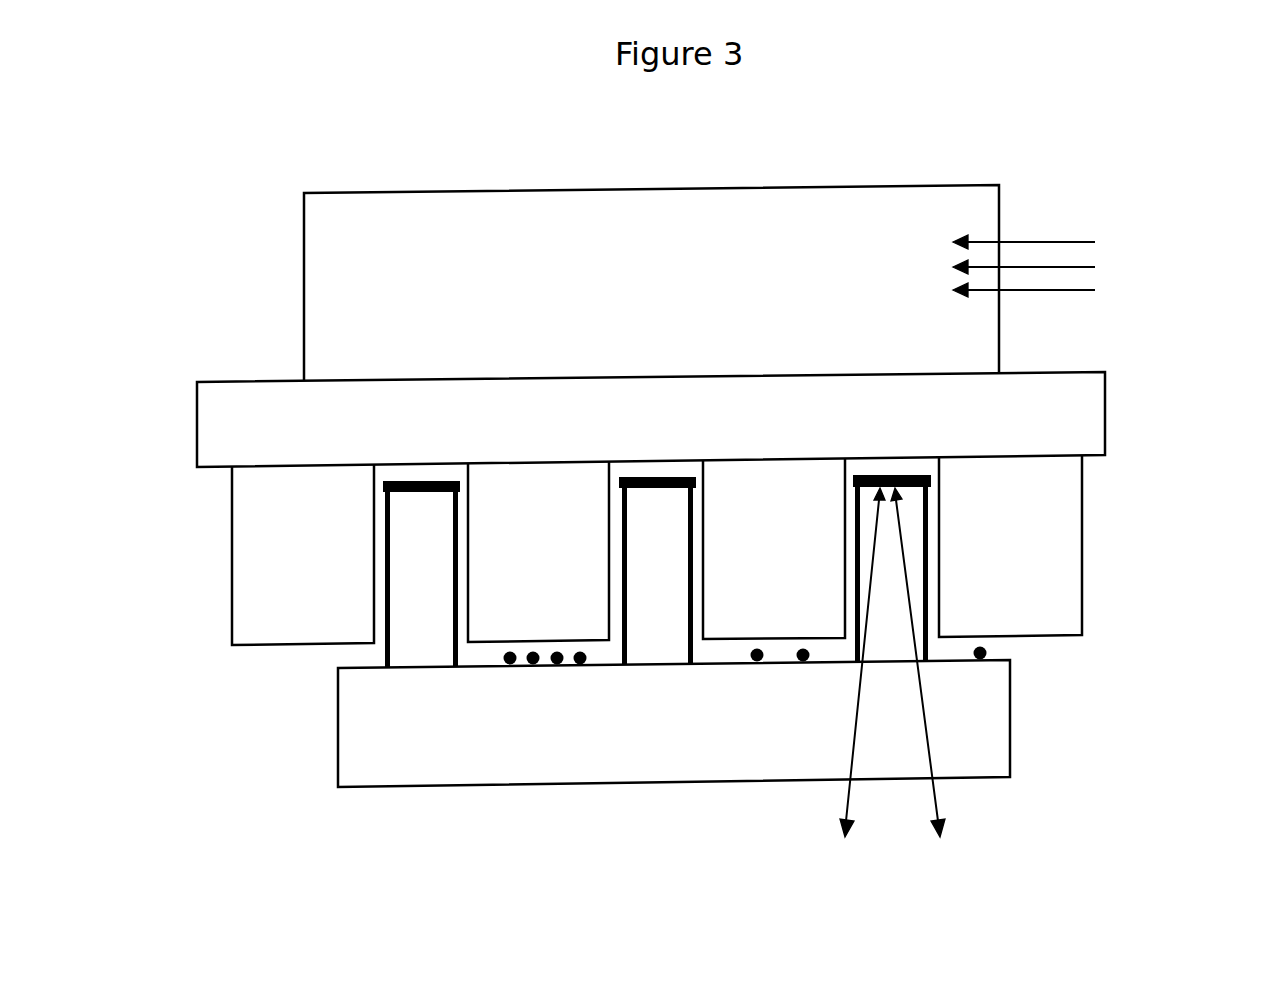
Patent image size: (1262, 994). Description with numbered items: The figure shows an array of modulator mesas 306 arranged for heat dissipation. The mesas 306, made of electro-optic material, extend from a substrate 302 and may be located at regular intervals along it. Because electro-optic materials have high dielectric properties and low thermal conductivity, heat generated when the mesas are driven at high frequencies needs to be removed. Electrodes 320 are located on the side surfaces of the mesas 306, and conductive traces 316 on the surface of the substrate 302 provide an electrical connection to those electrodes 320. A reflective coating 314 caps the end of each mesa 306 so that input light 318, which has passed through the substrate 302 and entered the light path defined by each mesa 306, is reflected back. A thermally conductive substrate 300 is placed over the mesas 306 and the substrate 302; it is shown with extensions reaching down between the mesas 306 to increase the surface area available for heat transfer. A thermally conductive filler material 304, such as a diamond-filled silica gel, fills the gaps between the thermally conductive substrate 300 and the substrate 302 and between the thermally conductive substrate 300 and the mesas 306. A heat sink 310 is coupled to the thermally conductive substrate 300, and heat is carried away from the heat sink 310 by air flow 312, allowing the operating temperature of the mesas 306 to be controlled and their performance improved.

The thermally conductive substrate 300 is at (678, 436).
The substrate 302 is at (701, 741).
The thermally conductive filler material 304 is at (422, 473).
The modulator mesas 306 is at (422, 570).
The heat sink 310 is at (633, 188).
The air flow 312 is at (1173, 279).
The reflective coating 314 is at (923, 472).
The conductive traces 316 is at (980, 660).
The input light 318 is at (927, 802).
The electrodes 320 is at (455, 643).